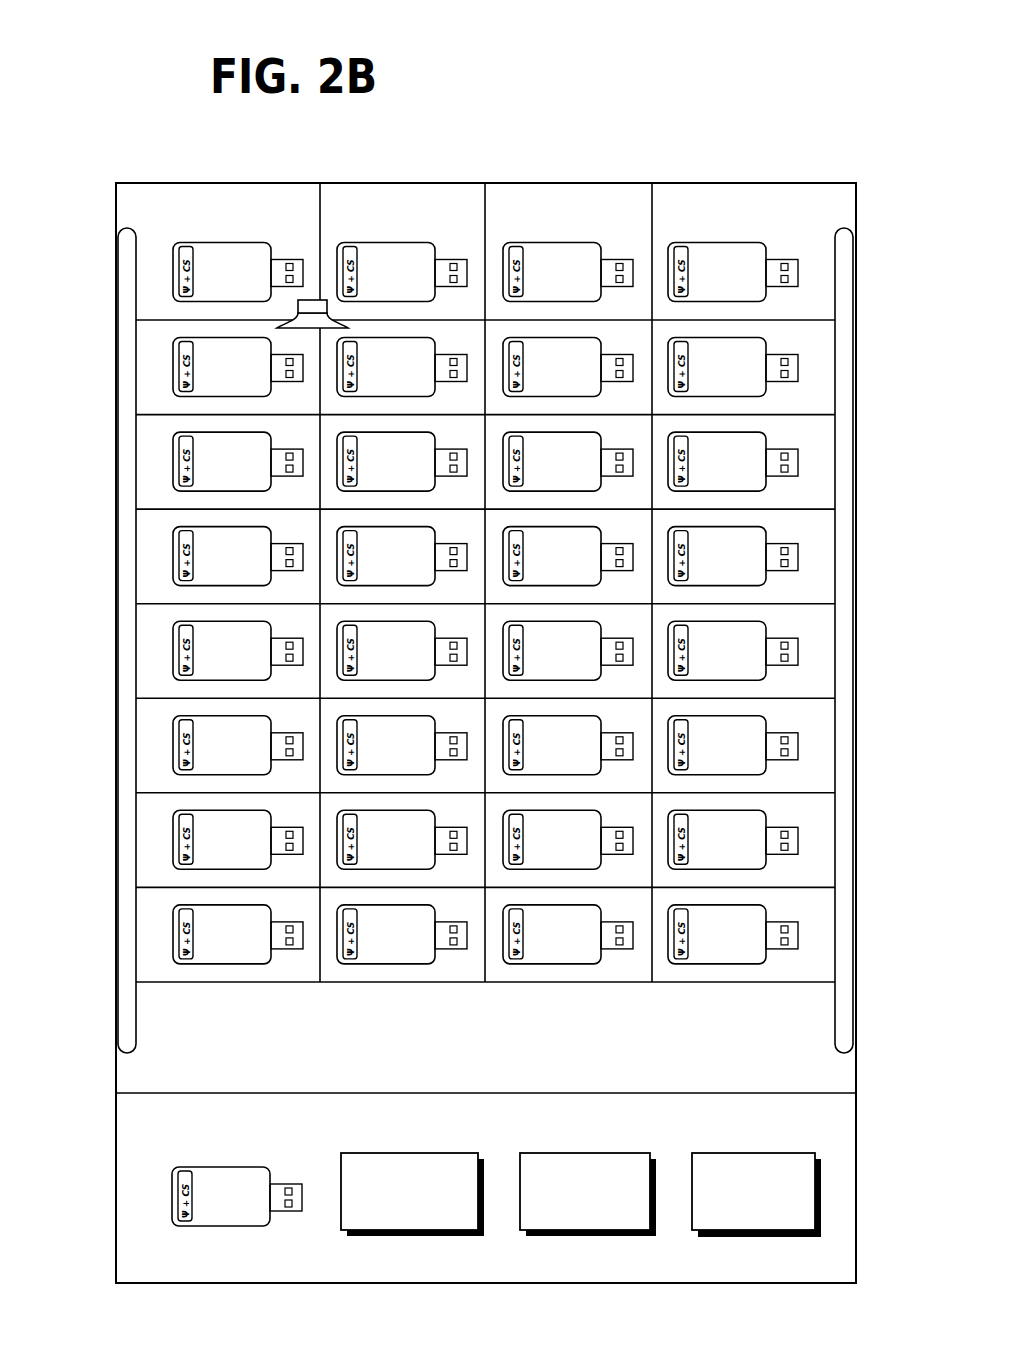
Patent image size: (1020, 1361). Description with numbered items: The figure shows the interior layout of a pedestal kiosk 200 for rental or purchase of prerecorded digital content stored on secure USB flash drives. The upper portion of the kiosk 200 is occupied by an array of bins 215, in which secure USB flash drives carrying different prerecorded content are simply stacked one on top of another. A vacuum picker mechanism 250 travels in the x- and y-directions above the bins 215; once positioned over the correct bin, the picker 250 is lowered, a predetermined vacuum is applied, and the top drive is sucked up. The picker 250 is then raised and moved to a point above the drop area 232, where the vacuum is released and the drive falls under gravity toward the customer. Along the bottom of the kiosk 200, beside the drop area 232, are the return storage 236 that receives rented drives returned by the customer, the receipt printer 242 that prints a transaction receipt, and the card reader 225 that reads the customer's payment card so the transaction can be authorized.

The pedestal kiosk 200 is at (788, 46).
The bins 215 is at (800, 228).
The vacuum picker mechanism 250 is at (300, 303).
The drop area 232 is at (146, 1124).
The return storage 236 is at (413, 1153).
The receipt printer 242 is at (598, 1153).
The card reader 225 is at (748, 1153).